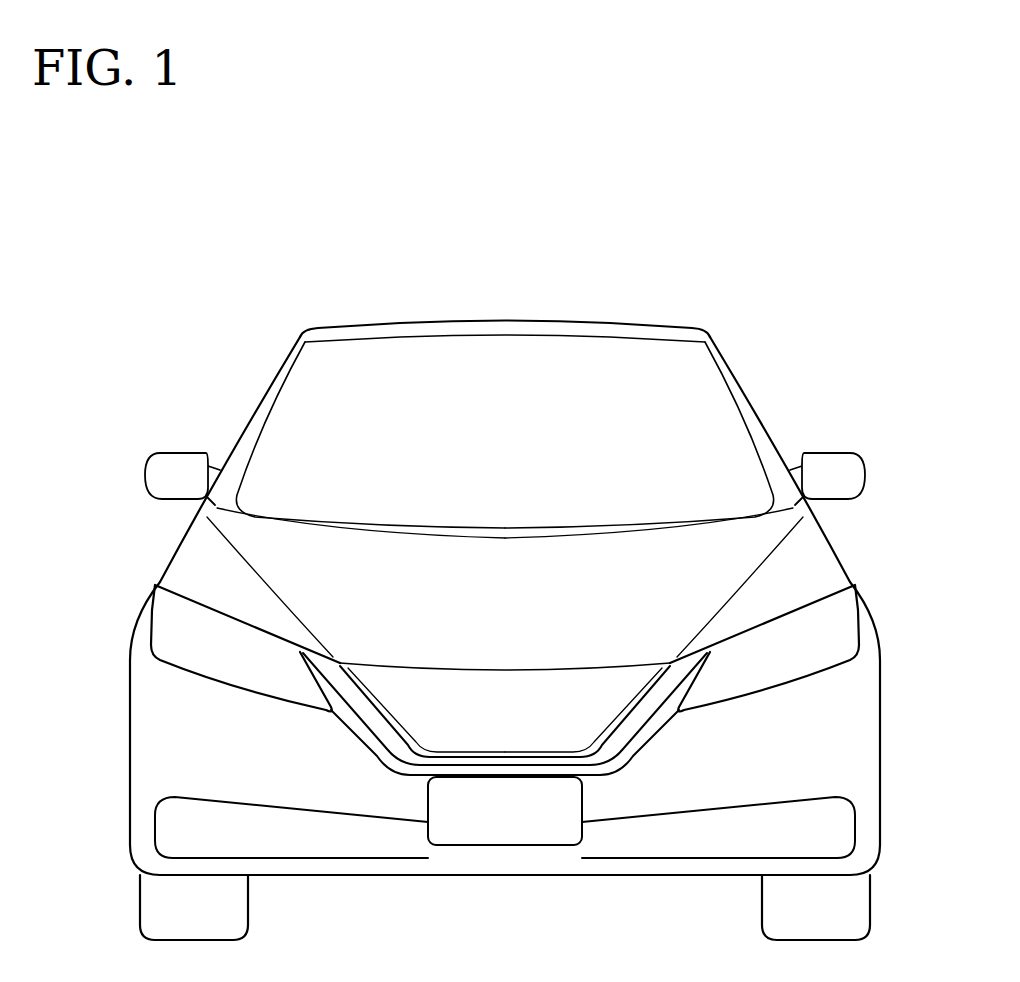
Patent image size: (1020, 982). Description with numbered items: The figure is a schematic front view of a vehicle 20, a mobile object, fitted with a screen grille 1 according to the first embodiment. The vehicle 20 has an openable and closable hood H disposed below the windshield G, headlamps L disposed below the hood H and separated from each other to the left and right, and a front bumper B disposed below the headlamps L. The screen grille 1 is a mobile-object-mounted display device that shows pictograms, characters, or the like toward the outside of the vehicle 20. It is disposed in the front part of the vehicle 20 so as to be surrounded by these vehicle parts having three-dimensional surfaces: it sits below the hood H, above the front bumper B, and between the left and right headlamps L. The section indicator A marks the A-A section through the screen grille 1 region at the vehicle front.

The vehicle 20 is at (740, 271).
The windshield G is at (446, 371).
The hood H is at (307, 577).
The screen grille 1 is at (556, 664).
The headlamps L is at (217, 650).
The front bumper B is at (237, 750).
The section line A- A is at (503, 660).